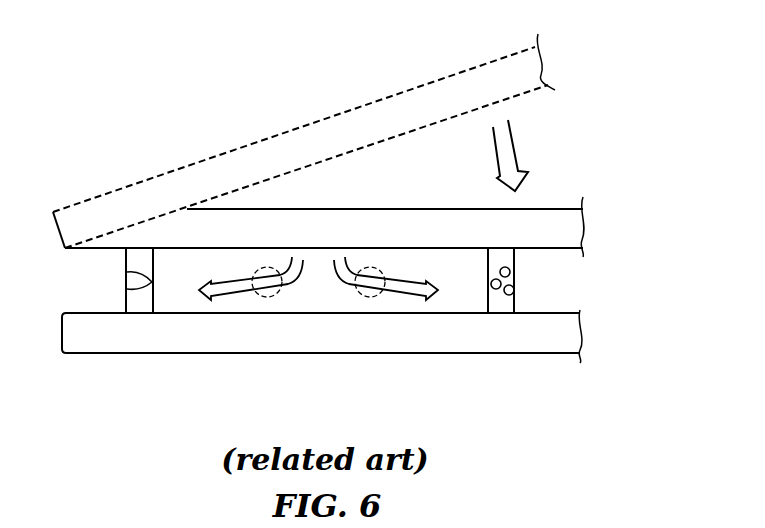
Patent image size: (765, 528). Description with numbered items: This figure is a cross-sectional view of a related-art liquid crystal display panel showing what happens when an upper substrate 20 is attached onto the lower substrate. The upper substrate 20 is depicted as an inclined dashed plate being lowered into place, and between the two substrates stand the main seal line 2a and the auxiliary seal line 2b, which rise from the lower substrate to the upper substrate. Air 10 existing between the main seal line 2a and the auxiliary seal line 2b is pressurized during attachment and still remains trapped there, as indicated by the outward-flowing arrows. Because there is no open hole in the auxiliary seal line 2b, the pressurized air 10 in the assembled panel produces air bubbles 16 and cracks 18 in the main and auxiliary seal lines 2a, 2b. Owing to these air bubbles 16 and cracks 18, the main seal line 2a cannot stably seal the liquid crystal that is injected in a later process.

The upper substrate 20 is at (287, 111).
The main seal line 2a is at (498, 308).
The auxiliary seal line 2b is at (143, 305).
The air 10 is at (275, 295).
The air bubbles 16 is at (513, 295).
The cracks 18 is at (138, 290).